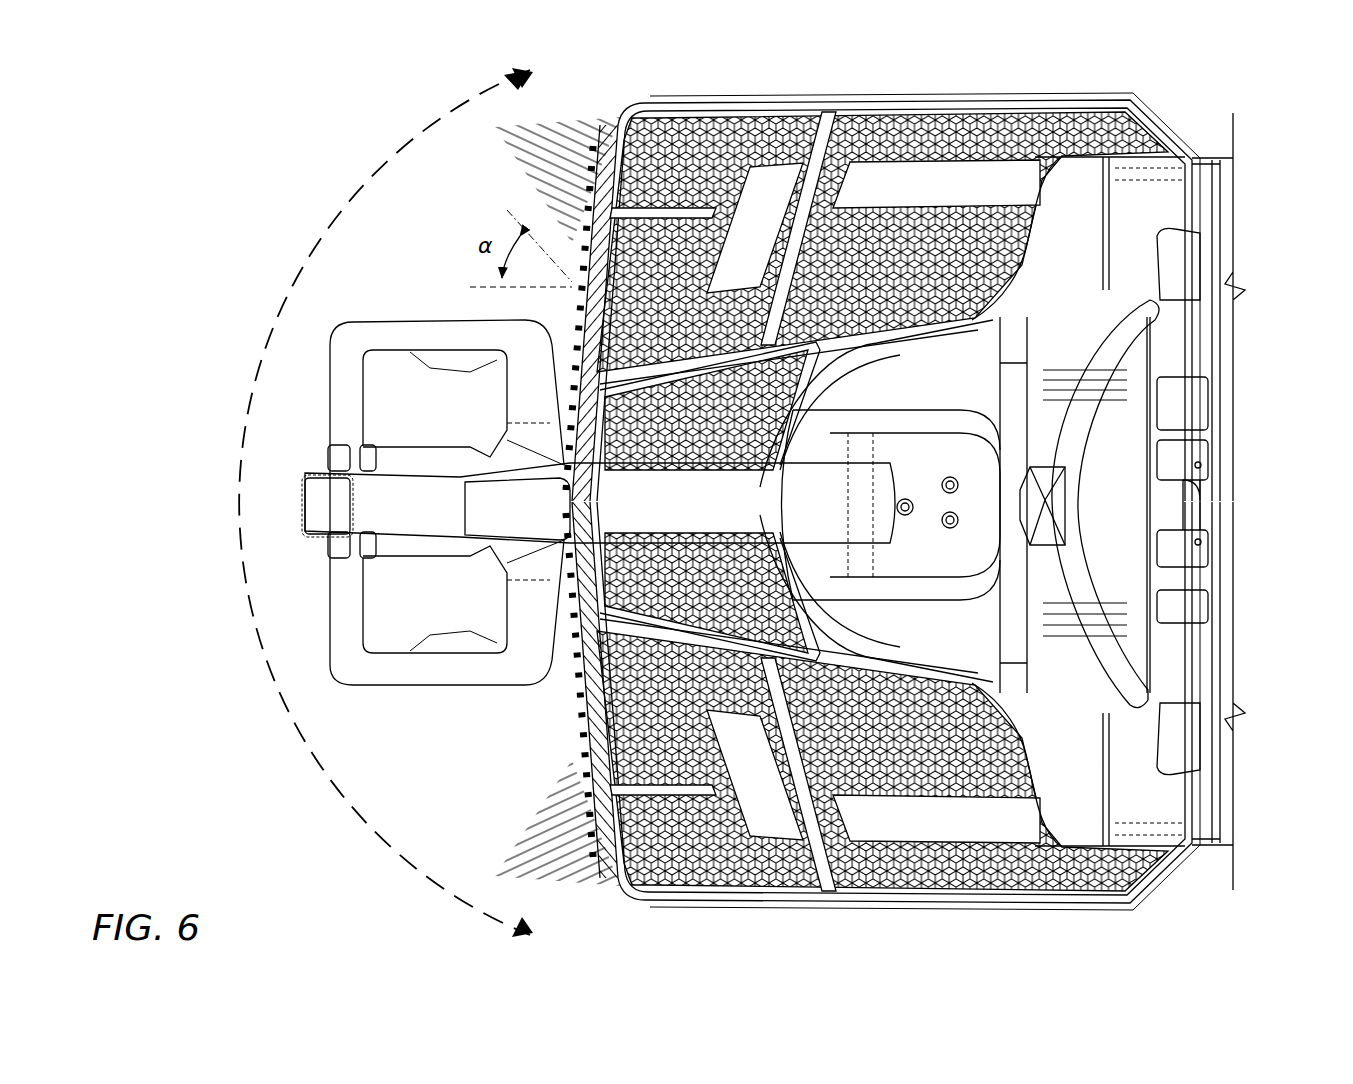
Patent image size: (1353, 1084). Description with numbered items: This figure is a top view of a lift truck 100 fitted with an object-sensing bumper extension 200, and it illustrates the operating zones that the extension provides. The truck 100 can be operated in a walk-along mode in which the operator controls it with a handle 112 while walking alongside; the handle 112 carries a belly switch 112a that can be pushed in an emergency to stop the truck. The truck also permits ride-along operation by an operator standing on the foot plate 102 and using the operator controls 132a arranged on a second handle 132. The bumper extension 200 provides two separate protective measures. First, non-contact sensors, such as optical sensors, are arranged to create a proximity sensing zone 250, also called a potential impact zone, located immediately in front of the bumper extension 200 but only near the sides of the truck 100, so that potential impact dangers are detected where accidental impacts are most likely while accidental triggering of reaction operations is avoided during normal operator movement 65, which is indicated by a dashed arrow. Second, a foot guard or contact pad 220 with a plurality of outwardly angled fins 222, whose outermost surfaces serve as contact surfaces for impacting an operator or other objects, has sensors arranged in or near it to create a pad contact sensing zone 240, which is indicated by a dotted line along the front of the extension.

The lift truck 100 is at (1190, 116).
The foot plate 102 is at (686, 760).
The handle 112 is at (330, 392).
The belly switch 112a is at (306, 508).
The handle 132 is at (823, 242).
The operator controls 132a is at (1075, 502).
The object-sensing bumper extension 200 is at (600, 96).
The foot guard (contact pad) 220 is at (573, 752).
The fins (ridges) 222 is at (580, 733).
The pad contact sensing zone 240 is at (906, 954).
The proximity sensing zone 250 is at (395, 118).
The operator movement 65 is at (194, 709).